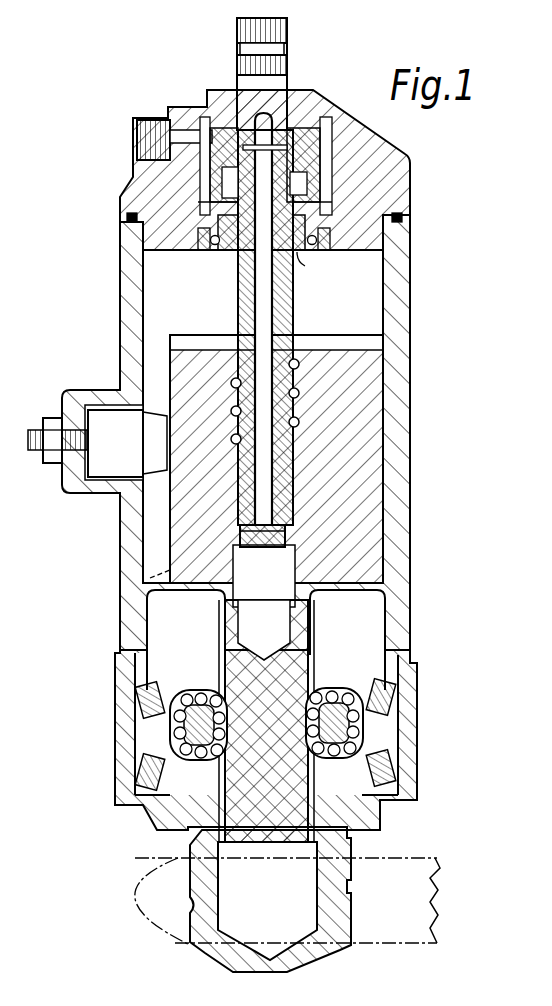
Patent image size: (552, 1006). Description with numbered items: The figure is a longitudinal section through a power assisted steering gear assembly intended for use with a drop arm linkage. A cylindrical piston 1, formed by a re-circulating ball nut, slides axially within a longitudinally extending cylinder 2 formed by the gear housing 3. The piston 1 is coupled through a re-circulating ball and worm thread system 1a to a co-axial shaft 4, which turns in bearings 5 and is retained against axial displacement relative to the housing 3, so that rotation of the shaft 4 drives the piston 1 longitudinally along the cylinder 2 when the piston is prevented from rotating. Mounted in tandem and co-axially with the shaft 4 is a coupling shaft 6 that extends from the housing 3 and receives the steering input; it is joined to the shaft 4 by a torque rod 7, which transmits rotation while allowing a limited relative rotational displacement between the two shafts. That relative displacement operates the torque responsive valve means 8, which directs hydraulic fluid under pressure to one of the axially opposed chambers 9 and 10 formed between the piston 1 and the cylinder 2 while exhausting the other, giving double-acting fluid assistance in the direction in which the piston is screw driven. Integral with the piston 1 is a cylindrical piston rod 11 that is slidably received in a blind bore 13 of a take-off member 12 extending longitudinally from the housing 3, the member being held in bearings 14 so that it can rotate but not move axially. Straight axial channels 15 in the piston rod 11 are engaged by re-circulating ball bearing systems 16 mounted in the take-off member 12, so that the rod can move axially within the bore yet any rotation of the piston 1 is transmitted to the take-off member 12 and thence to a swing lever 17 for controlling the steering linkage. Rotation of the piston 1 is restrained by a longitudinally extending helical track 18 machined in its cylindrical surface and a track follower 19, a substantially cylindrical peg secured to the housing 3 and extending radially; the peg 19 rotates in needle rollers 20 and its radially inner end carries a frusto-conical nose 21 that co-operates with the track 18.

The piston 1 is at (373, 510).
The re-circulating ball and worm thread system 1a is at (297, 408).
The cylinder 2 is at (383, 618).
The gear housing 3 is at (132, 200).
The shaft 4 is at (238, 305).
The bearings 5 is at (307, 271).
The coupling shaft 6 is at (237, 62).
The torque rod 7 is at (268, 308).
The torque responsive valve means 8 is at (330, 158).
The chamber 9 is at (152, 290).
The chamber 10 is at (152, 621).
The piston rod 11 is at (235, 665).
The take-off member 12 is at (203, 828).
The blind bore 13 is at (220, 877).
The bearings 14 is at (150, 715).
The straight channels 15 is at (221, 626).
The re-circulating ball bearing systems 16 is at (200, 692).
The swing lever 17 is at (377, 952).
The track 18 is at (153, 530).
The track follower 19 is at (100, 427).
The needle rollers 20 is at (107, 478).
The frusto-conical nose 21 is at (157, 463).